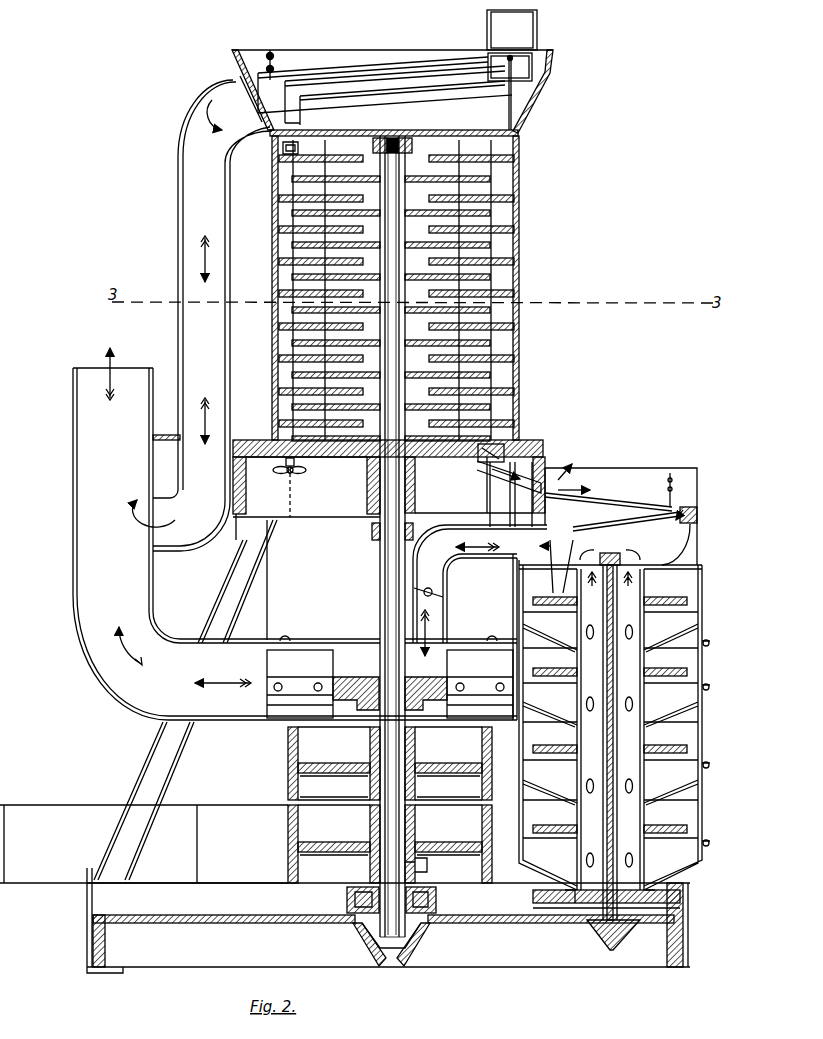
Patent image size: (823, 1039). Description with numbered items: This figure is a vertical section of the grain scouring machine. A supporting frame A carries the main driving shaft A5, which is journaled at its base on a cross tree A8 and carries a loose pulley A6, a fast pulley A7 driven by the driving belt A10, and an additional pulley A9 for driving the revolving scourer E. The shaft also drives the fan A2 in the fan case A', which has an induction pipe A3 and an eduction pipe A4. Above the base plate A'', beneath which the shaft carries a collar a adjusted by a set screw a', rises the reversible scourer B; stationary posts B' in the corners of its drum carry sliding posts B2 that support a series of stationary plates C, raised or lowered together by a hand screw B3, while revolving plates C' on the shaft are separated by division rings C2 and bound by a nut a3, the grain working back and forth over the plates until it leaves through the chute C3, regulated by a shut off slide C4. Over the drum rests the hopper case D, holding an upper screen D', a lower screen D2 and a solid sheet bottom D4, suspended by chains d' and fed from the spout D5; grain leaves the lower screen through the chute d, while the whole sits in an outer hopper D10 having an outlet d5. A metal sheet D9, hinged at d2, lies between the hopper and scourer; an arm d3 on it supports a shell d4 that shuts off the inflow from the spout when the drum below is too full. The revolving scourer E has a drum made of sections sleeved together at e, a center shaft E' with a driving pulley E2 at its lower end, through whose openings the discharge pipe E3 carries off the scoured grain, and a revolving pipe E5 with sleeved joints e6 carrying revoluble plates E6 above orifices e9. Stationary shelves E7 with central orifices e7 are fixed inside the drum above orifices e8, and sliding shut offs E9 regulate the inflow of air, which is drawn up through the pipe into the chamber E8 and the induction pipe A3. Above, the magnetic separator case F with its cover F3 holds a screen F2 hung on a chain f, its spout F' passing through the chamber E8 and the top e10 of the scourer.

The outer hopper D10 is at (392, 80).
The spout D5 is at (512, 30).
The metal sheet D9 is at (470, 130).
The upper screen D' is at (385, 79).
The lower screen D2 is at (372, 100).
The hopper case D is at (320, 64).
The solid sheet bottom D4 is at (411, 108).
The chute d is at (310, 117).
The shell d4 is at (510, 67).
The arm d3 is at (501, 93).
The outlet d5 is at (247, 86).
The chains d' is at (290, 66).
The hinge d2 is at (262, 132).
The eduction pipe A4 is at (160, 689).
The reversible scourer B is at (381, 288).
The nut a3 is at (403, 145).
The stationary posts B' is at (392, 282).
The revolving plates C' is at (417, 308).
The division rings C2 is at (264, 288).
The sliding posts B2 is at (488, 222).
The stationary plates C is at (391, 360).
The shut off slide C4 is at (510, 455).
The main driving shaft A5 is at (400, 590).
The base plate A'' is at (388, 490).
The hand screw B3 is at (301, 487).
The collar a is at (365, 530).
The set screw a' is at (417, 525).
The chute C3 is at (478, 466).
The supporting frame A is at (198, 700).
The induction pipe A3 is at (480, 622).
The fan case A' is at (388, 633).
The fan A2 is at (334, 676).
The loose pulley A6 is at (390, 763).
The fast pulley A7 is at (390, 844).
The driving belt A10 is at (144, 844).
The cross tree A8 is at (388, 920).
The additional pulley A9 is at (347, 899).
The revolving scourer E is at (620, 740).
The revoluble plates E6 is at (676, 591).
The stationary shelves E7 is at (686, 632).
The sliding shut offs E9 is at (536, 802).
The revolving pipe E5 is at (578, 780).
The center shaft E' is at (598, 811).
The sleeved joints e is at (711, 743).
The orifices e9 is at (645, 632).
The central orifice e7 is at (560, 724).
The sleeved joints e6 is at (573, 767).
The orifices e8 is at (688, 782).
The driving pulley E2 is at (540, 899).
The chamber E8 is at (610, 561).
The top e10 is at (680, 560).
The case F is at (633, 514).
The cover F3 is at (648, 448).
The screen F2 is at (609, 503).
The discharge pipe E3 is at (626, 517).
The chain f is at (682, 498).
The spout F' is at (556, 566).